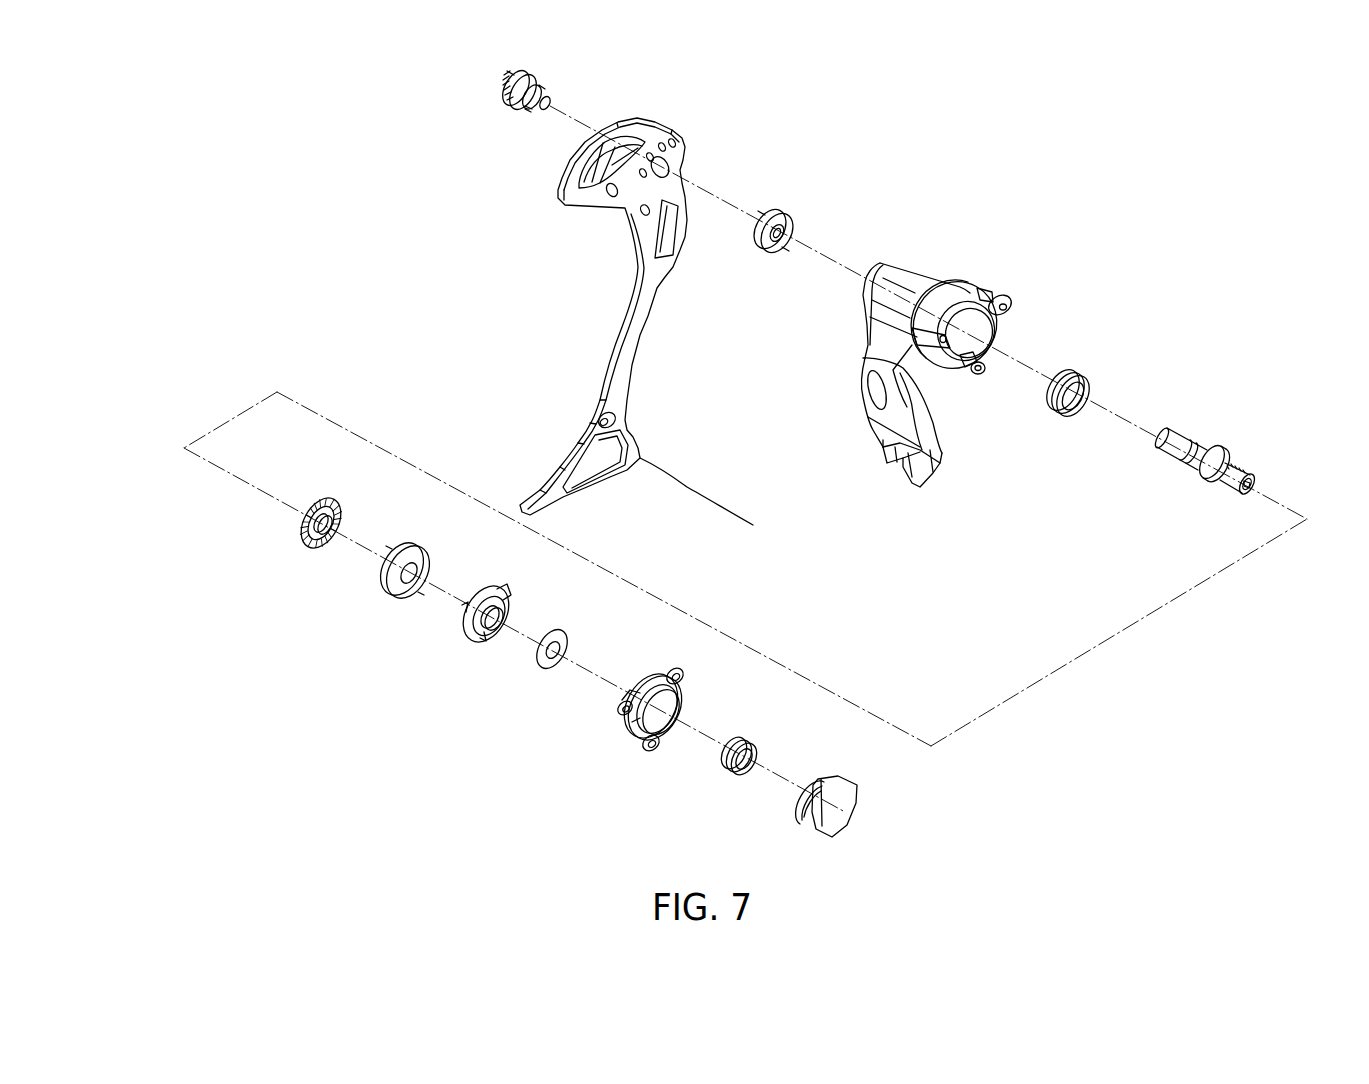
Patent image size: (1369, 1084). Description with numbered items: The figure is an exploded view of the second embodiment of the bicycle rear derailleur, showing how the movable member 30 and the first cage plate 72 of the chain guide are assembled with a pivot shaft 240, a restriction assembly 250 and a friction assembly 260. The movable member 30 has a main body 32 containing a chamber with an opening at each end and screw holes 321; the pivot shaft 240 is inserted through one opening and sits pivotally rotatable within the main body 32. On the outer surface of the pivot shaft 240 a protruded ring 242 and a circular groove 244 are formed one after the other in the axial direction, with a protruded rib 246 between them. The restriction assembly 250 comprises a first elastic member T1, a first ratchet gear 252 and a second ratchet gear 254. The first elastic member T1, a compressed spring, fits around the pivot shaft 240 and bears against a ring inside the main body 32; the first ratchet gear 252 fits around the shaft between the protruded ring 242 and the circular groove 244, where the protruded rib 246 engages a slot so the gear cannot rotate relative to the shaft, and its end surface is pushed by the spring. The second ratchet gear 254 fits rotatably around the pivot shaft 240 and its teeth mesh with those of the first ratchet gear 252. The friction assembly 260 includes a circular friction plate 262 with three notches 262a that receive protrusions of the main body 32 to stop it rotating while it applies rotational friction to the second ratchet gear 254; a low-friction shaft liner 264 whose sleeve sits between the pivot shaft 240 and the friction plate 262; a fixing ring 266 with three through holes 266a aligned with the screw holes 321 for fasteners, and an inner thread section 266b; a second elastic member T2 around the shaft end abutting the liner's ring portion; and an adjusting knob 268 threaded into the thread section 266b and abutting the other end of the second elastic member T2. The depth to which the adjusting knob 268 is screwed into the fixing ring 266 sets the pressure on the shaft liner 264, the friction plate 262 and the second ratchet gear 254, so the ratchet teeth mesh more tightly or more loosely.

The movable member 30 is at (971, 303).
The main body 32 is at (962, 287).
The screw hole 321 is at (1020, 306).
The first cage plate 72 is at (648, 455).
The first elastic member T1 is at (1082, 372).
The pivot shaft 240 is at (1251, 420).
The protruded ring 242 is at (1215, 452).
The circular groove 244 is at (1210, 478).
The protruded rib 246 is at (1228, 460).
The restriction assembly 250 is at (253, 570).
The first ratchet gear 252 is at (297, 517).
The second ratchet gear 254 is at (380, 580).
The friction assembly 260 is at (620, 707).
The friction plate 262 is at (460, 630).
The notch 262a is at (510, 589).
The shaft liner 264 is at (532, 658).
The fixing ring 266 is at (625, 738).
The through hole 266a is at (688, 678).
The thread section 266b is at (655, 748).
The second elastic member T2 is at (762, 754).
The adjusting knob 268 is at (843, 802).